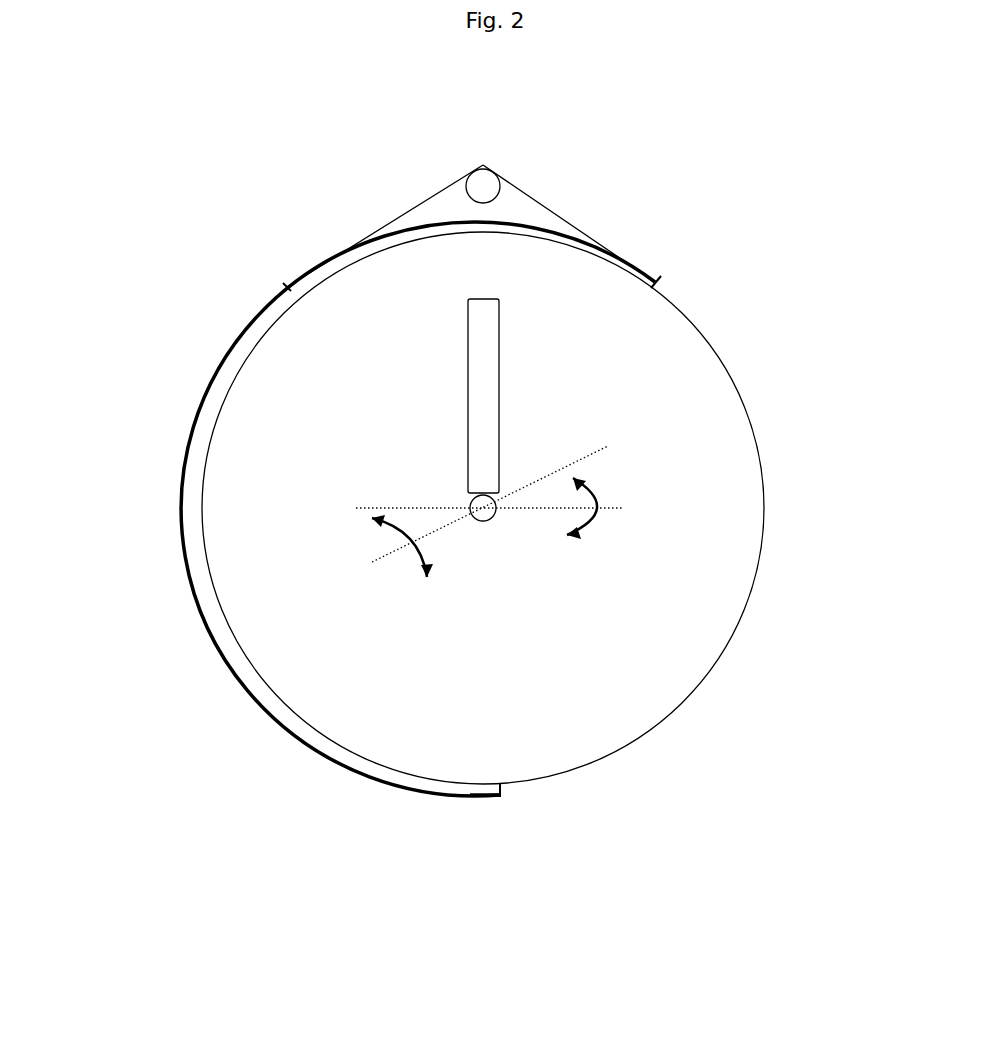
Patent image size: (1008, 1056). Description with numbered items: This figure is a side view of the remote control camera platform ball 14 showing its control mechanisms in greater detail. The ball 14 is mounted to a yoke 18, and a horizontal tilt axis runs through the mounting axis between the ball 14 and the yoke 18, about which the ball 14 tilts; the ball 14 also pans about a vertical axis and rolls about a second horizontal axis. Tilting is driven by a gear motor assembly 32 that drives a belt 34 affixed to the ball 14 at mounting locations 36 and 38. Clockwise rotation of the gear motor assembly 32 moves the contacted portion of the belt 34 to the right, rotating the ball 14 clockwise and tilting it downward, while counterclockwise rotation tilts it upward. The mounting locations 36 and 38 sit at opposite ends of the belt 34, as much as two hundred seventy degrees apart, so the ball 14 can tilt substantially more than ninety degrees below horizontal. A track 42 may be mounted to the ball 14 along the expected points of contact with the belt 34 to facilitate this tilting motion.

The ball 14 is at (513, 618).
The yoke 18 is at (522, 366).
The gear motor assembly 32 is at (502, 140).
The belt 34 is at (378, 199).
The mounting location 36 is at (632, 230).
The mounting location 38 is at (479, 824).
The track 42 is at (158, 568).